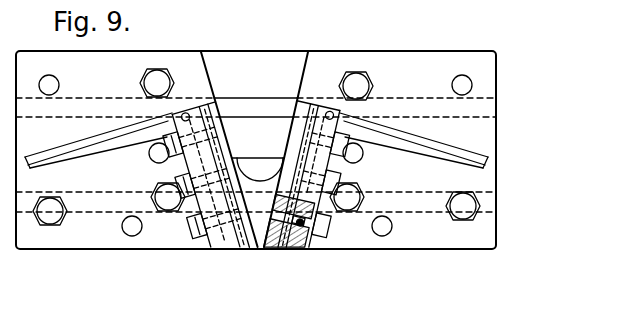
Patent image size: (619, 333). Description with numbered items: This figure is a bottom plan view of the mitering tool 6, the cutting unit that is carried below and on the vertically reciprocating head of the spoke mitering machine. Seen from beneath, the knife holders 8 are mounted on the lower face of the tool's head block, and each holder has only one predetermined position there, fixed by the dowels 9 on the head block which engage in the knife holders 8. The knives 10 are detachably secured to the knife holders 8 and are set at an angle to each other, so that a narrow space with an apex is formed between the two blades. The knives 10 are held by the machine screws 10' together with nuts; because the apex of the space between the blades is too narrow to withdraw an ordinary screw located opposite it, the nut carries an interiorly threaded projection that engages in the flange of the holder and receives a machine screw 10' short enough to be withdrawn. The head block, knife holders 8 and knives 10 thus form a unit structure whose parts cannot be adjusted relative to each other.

The mitering tool 6 is at (342, 45).
The knife holders 8 is at (483, 67).
The dowels 9 is at (58, 80).
The knives 10 is at (263, 192).
The machine screws 10' is at (234, 177).